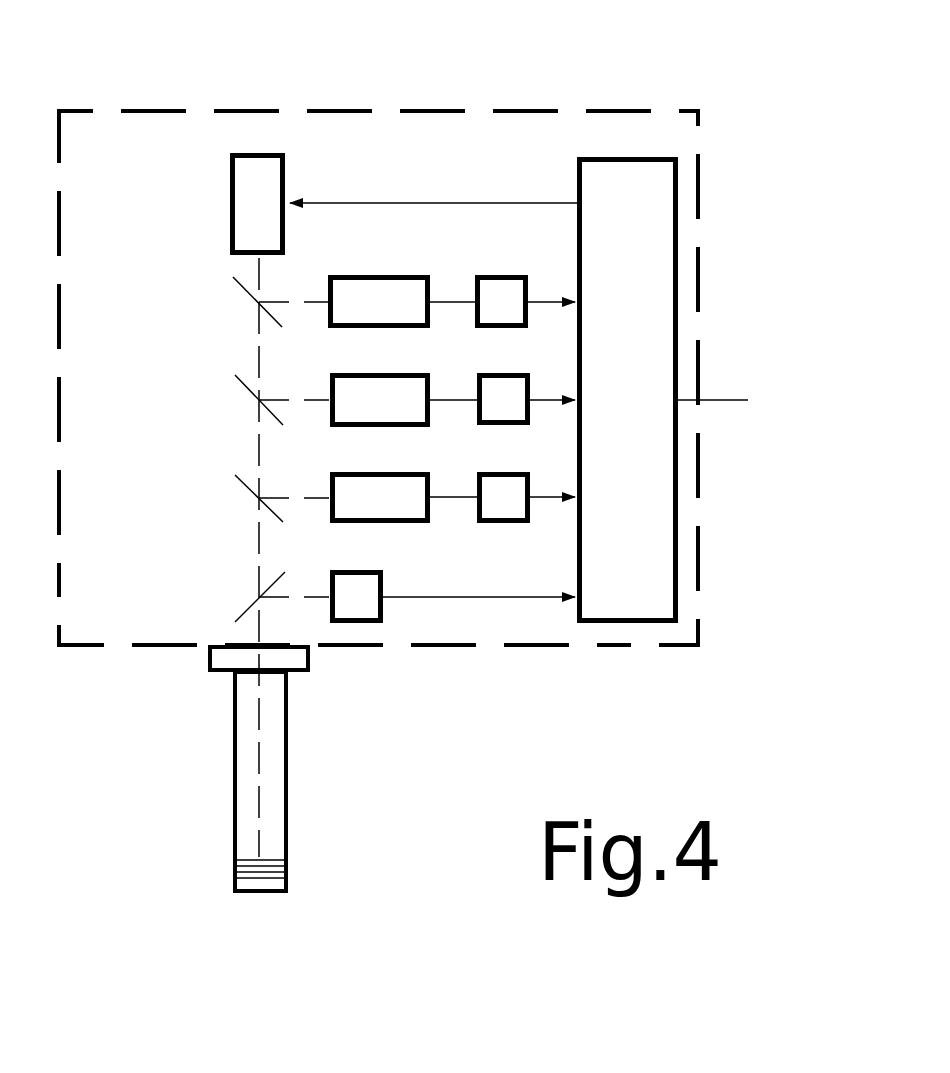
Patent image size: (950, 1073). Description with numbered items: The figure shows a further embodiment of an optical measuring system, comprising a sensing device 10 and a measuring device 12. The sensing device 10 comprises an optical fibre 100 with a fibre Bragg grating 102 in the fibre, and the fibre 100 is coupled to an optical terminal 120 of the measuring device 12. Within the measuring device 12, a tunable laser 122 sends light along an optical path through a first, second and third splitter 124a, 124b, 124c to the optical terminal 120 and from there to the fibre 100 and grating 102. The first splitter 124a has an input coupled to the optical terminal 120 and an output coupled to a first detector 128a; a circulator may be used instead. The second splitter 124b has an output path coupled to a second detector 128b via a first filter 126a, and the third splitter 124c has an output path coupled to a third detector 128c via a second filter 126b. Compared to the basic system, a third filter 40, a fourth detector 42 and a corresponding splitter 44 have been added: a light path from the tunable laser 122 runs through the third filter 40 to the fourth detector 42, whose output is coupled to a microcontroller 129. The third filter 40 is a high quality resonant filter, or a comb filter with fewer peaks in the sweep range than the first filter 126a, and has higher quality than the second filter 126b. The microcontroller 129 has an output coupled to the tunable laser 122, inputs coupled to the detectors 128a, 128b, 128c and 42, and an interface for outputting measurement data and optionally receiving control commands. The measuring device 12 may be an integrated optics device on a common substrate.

The sensing device 10 is at (178, 845).
The measuring device 12 is at (182, 108).
The third filter 40 is at (383, 275).
The fourth detector 42 is at (510, 275).
The splitter 44 is at (233, 277).
The optical fibre 100 is at (233, 768).
The fibre Bragg grating 102 is at (288, 863).
The optical terminal 120 is at (208, 672).
The tunable laser 122 is at (260, 152).
The first splitter 124a is at (235, 622).
The second splitter 124b is at (235, 475).
The third splitter 124c is at (235, 375).
The first filter 126a is at (403, 523).
The second filter 126b is at (403, 427).
The first light intensity detector 128a is at (363, 623).
The second light intensity detector 128b is at (502, 523).
The third light intensity detector 128c is at (502, 373).
The microcontroller 129 is at (602, 156).